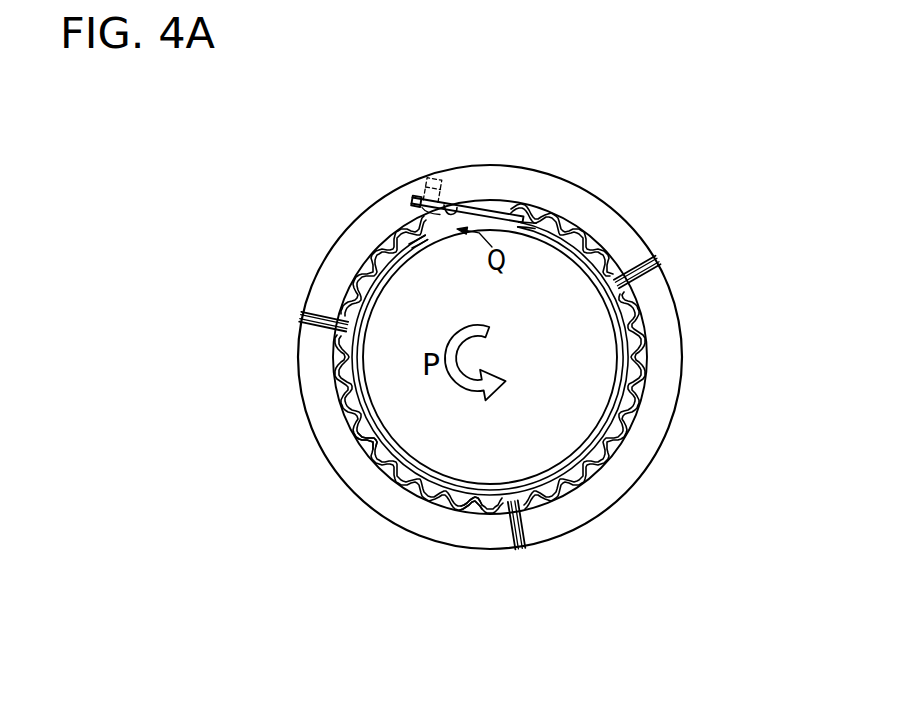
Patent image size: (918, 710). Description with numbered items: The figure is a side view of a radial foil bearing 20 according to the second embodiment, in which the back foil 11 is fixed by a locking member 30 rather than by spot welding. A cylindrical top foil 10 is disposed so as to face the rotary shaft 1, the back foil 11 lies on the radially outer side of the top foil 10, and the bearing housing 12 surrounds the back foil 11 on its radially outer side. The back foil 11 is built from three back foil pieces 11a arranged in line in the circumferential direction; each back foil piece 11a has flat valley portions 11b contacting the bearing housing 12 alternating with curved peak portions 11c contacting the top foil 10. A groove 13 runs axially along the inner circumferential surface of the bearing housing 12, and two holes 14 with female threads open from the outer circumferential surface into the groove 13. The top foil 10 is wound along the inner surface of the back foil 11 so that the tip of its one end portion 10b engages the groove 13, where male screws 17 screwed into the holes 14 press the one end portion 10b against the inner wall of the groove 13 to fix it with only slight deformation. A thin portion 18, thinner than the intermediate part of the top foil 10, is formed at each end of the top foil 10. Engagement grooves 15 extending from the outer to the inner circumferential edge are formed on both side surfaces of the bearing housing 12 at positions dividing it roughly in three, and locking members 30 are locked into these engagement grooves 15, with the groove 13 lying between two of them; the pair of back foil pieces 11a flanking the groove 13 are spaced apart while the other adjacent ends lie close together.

The rotary shaft 1 is at (553, 423).
The top foil 10 is at (622, 405).
The one end portion 10b is at (441, 213).
The back foil 11 is at (643, 363).
The back foil piece 11a is at (365, 273).
The flat valley portion 11b is at (357, 433).
The curved peak portion 11c is at (365, 446).
The bearing housing 12 is at (668, 345).
The groove 13 is at (452, 206).
The hole 14 is at (426, 188).
The engagement groove 15 is at (651, 261).
The male screw 17 is at (421, 182).
The thin portion 18 is at (430, 242).
The radial foil bearing 20 is at (597, 183).
The locking member 30 is at (637, 262).